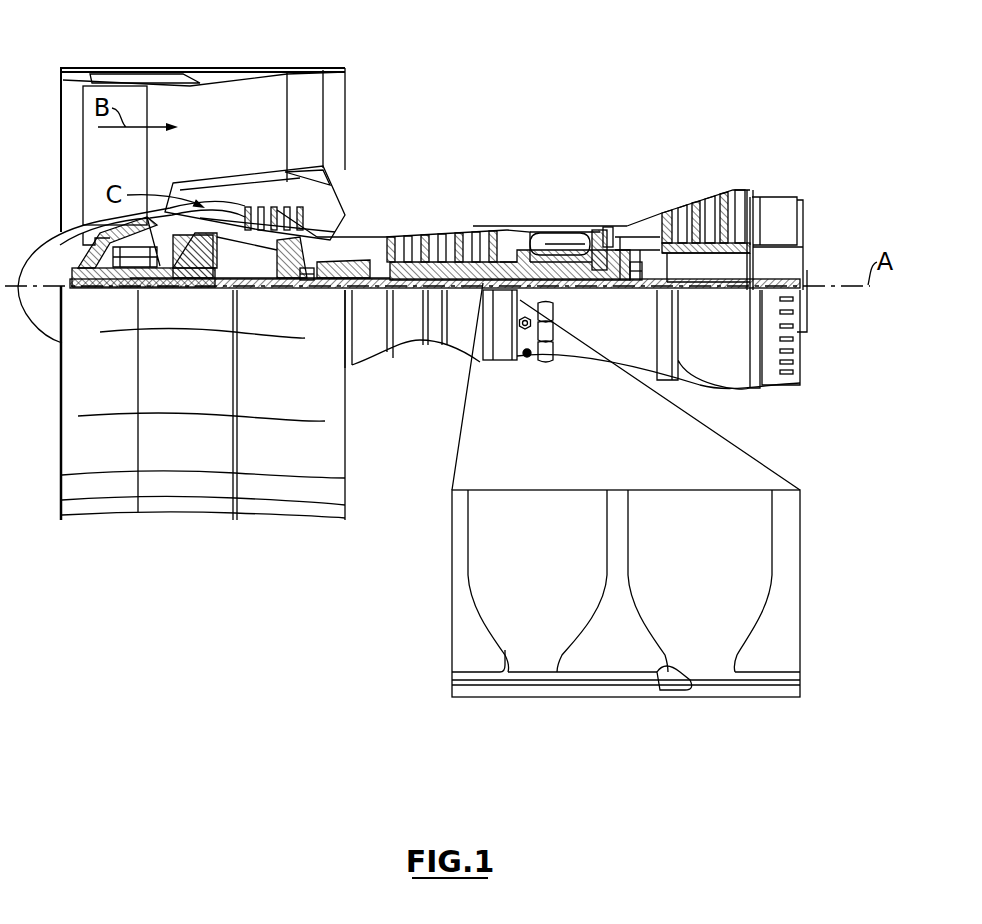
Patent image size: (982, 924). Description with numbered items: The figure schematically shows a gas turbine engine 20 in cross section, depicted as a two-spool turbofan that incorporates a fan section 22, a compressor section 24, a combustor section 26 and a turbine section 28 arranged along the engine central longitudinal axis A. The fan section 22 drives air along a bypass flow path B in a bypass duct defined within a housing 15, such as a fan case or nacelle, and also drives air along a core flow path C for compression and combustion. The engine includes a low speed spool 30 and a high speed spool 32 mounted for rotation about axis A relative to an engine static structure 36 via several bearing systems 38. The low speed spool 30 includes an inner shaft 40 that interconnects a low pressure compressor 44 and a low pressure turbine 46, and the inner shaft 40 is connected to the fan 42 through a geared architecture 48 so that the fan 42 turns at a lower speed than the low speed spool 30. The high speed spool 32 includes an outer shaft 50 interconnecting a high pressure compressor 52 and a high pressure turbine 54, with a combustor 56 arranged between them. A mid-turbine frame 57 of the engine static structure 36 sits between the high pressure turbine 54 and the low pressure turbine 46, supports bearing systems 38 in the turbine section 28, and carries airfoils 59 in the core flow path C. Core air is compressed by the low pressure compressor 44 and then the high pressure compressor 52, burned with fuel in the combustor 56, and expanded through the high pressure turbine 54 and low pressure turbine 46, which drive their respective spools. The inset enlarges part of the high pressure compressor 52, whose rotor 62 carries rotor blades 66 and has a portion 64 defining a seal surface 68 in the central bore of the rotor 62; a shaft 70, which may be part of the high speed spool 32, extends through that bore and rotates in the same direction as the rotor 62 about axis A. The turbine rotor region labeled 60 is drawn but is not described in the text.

The housing 15 is at (203, 72).
The gas turbine engine 20 is at (572, 100).
The fan section 22 is at (147, 60).
The compressor section 24 is at (389, 206).
The combustor section 26 is at (565, 208).
The turbine section 28 is at (693, 163).
The low speed spool 30 is at (466, 300).
The high speed spool 32 is at (510, 242).
The engine static structure 36 is at (500, 367).
The bearing systems 38 is at (310, 286).
The inner shaft 40 is at (363, 355).
The fan 42 is at (103, 167).
The low pressure compressor 44 is at (292, 208).
The low pressure turbine 46 is at (708, 192).
The geared architecture 48 is at (205, 286).
The outer shaft 50 is at (566, 292).
The high pressure compressor 52 is at (452, 240).
The high pressure turbine 54 is at (612, 236).
The combustor 56 is at (577, 245).
The mid-turbine frame 57 is at (648, 210).
The airfoils 59 is at (668, 258).
The turbine rotor assembly 60 is at (633, 302).
The rotor 62 is at (607, 556).
The portion 64 is at (560, 660).
The rotor blades 66 is at (488, 290).
The seal surface 68 is at (622, 678).
The shaft 70 is at (462, 685).